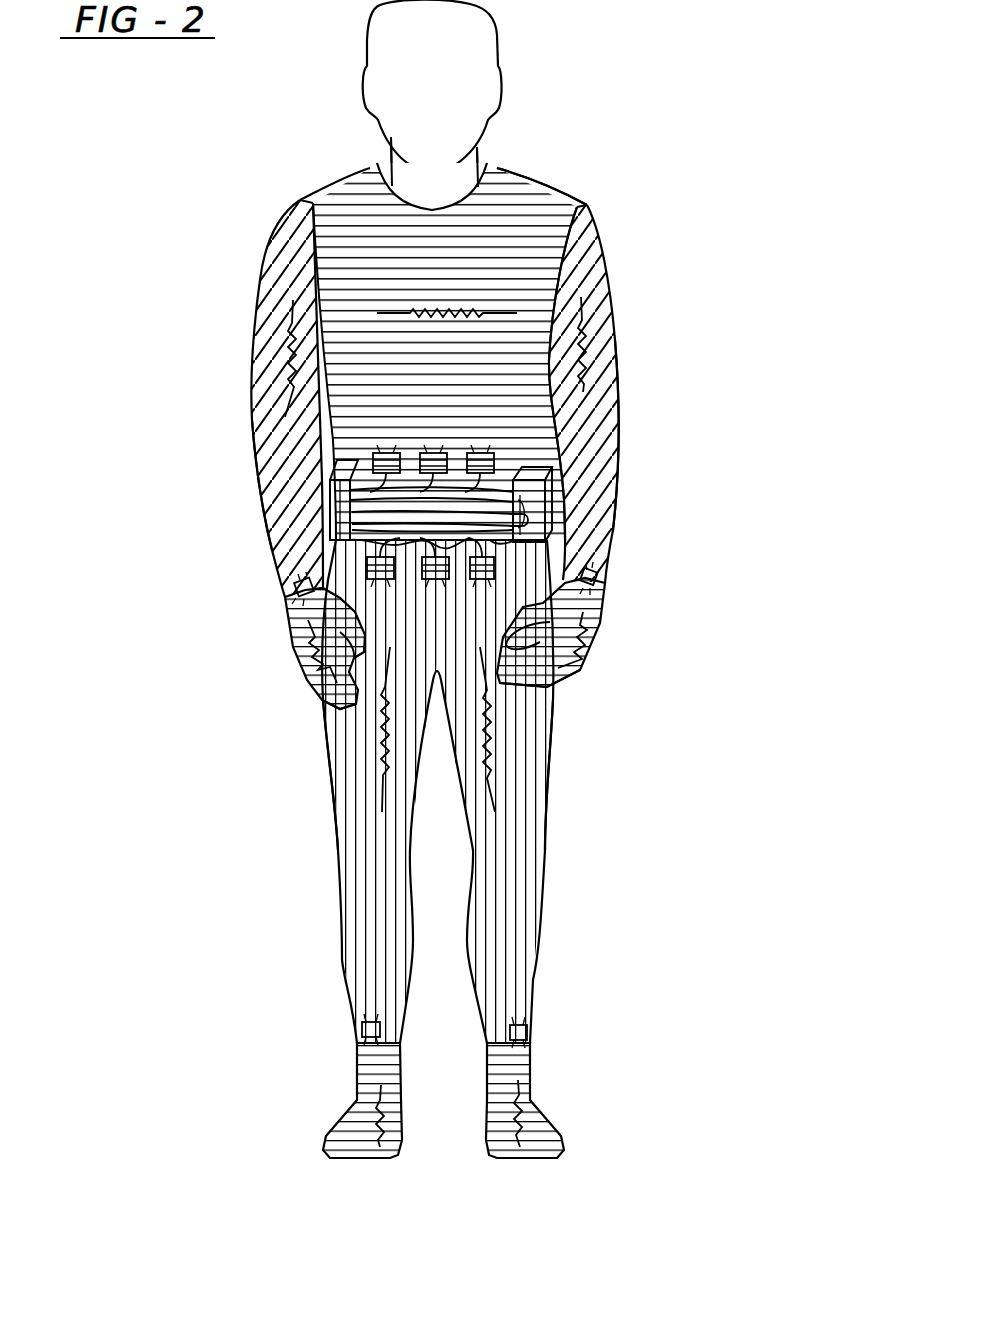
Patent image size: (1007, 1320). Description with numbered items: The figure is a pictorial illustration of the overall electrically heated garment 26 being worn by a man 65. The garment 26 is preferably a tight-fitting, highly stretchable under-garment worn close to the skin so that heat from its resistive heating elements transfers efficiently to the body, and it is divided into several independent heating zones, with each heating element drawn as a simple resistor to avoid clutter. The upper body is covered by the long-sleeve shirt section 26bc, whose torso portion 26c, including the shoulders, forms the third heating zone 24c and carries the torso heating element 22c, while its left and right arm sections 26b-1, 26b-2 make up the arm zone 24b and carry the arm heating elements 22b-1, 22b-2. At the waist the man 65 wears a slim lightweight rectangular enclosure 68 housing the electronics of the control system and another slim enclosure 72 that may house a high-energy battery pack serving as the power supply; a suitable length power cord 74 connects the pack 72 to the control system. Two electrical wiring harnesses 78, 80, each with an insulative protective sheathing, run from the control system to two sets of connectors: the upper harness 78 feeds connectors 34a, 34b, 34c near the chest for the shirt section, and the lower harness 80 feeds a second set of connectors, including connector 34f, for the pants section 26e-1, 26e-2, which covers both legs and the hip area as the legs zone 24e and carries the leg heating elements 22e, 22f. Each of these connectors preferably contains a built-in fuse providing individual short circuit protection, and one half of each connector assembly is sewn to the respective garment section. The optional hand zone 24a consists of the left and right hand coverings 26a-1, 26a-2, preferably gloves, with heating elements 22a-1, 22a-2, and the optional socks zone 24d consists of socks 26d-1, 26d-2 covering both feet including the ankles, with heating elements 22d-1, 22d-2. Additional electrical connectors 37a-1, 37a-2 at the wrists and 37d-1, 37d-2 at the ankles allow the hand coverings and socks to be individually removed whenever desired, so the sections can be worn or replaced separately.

The man 65 is at (530, 60).
The garment 26 is at (590, 163).
The long-sleeve shirt section 26bc is at (590, 192).
The torso section 26c is at (335, 205).
The third heating zone 24c is at (532, 178).
The torso heating element 22c is at (423, 307).
The right arm section 26b-2 is at (285, 445).
The left arm section 26b-1 is at (593, 253).
The right arm heating element 22b-2 is at (287, 345).
The left arm heating element 22b-1 is at (590, 335).
The arm heating zone 24b is at (238, 390).
The connector 34a is at (386, 453).
The connector 34b is at (432, 453).
The connector 34c is at (480, 453).
The connector 34f is at (383, 582).
The electrical wiring harness 78 is at (345, 478).
The rectangular enclosure 68 is at (330, 518).
The electrical wiring harness 80 is at (330, 545).
The enclosure 72 is at (540, 500).
The power cord 74 is at (545, 540).
The hand covering 26a-2 is at (300, 675).
The hand covering 26a-1 is at (585, 683).
The right hand heating element 22a-2 is at (312, 640).
The left hand heating element 22a-1 is at (584, 620).
The electrical connector 37a-2 is at (295, 596).
The electrical connector 37a-1 is at (600, 585).
The hand heating zone 24a is at (300, 694).
The pants section 26e-2 is at (372, 932).
The pants section 26e-1 is at (527, 932).
The leg heating element 22f is at (383, 745).
The leg heating element 22e is at (505, 765).
The legs heating zone 24e is at (316, 797).
The sock 26d-2 is at (335, 1128).
The sock 26d-1 is at (560, 1147).
The right foot heating element 22d-2 is at (360, 1110).
The left foot heating element 22d-1 is at (535, 1100).
The electrical connector 37d-2 is at (362, 1027).
The electrical connector 37d-1 is at (527, 1032).
The socks heating zone 24d is at (412, 1128).